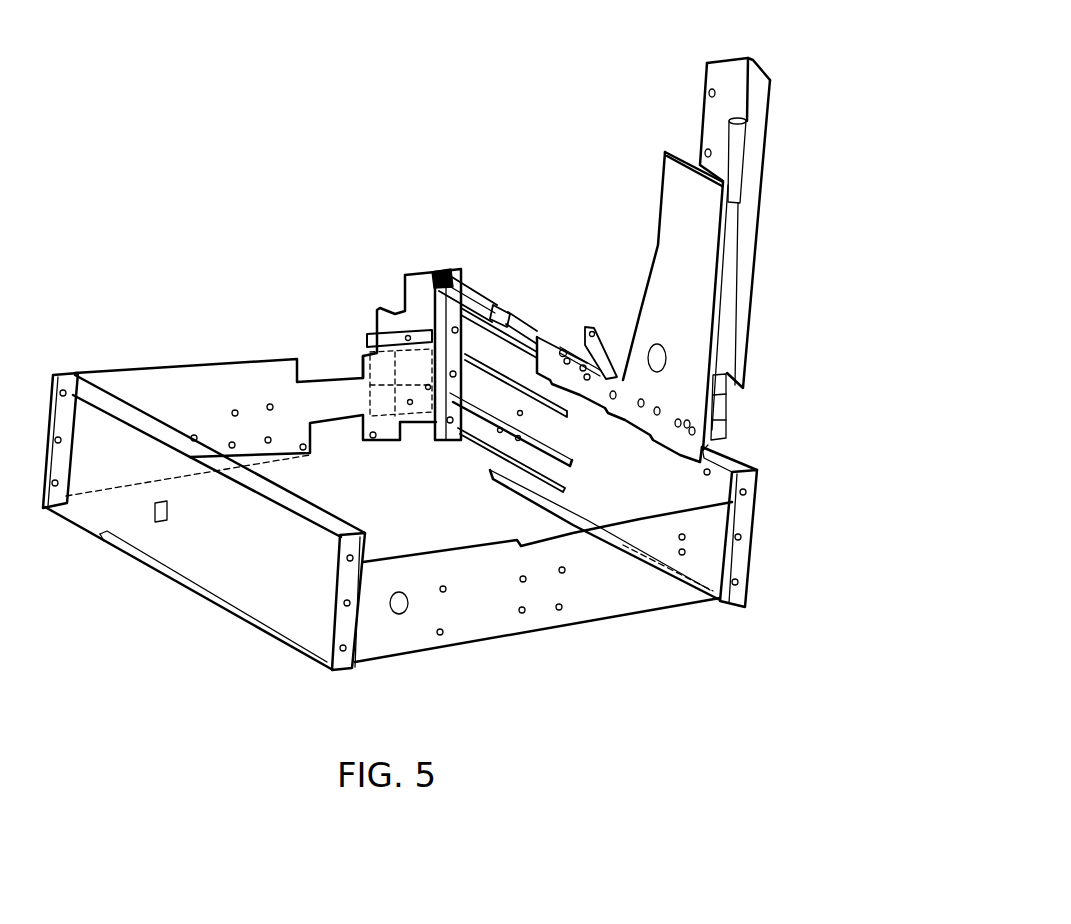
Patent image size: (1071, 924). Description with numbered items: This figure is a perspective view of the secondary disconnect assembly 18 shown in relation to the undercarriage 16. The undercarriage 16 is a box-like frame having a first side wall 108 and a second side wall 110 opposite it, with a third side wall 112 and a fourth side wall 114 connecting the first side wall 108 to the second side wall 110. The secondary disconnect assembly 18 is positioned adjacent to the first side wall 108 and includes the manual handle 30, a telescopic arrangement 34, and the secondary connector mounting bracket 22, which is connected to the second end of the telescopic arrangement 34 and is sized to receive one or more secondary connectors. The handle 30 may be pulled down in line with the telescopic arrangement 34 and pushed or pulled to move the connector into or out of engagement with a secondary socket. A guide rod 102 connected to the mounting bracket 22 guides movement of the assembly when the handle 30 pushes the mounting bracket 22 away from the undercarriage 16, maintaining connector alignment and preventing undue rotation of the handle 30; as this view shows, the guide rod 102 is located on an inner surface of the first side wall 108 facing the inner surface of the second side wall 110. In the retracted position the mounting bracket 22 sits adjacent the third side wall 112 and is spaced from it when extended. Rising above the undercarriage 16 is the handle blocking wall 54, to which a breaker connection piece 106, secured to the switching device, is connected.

The undercarriage 16 is at (742, 513).
The secondary disconnect assembly 18 is at (535, 302).
The secondary connector mounting bracket 22 is at (415, 302).
The manual handle 30 is at (727, 242).
The telescopic arrangement 34 is at (490, 293).
The handle blocking wall 54 is at (731, 73).
The guide rod 102 is at (487, 421).
The breaker connection piece 106 is at (682, 197).
The first side wall 108 is at (687, 492).
The second side wall 110 is at (222, 565).
The third side wall 112 is at (199, 397).
The fourth side wall 114 is at (488, 613).